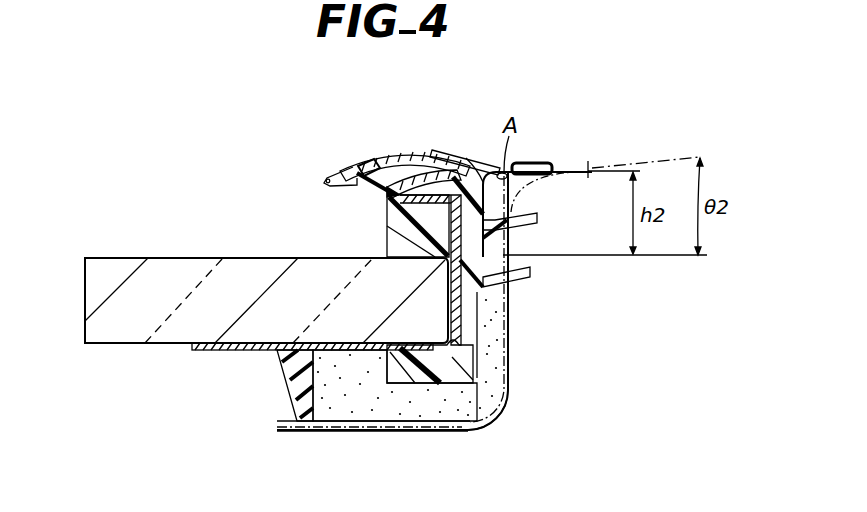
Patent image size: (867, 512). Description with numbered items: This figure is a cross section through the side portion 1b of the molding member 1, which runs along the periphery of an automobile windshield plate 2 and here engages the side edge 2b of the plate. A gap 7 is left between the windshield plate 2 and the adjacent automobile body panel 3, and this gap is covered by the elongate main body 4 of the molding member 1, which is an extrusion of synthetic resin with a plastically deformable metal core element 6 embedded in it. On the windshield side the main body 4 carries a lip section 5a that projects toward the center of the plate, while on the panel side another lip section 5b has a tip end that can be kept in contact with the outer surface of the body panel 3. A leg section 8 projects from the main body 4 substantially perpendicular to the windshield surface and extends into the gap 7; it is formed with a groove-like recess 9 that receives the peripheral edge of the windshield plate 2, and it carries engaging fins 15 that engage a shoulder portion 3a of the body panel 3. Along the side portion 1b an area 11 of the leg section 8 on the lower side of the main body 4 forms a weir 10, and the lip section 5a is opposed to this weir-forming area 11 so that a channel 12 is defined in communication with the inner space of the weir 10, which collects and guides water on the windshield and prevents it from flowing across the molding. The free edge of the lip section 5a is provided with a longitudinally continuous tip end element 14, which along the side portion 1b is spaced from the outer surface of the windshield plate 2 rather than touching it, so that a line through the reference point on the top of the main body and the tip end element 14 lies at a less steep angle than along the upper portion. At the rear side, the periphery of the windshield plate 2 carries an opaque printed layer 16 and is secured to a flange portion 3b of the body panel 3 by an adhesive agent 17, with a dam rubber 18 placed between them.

The molding member 1 is at (431, 147).
The side portion 1b is at (467, 155).
The windshield plate 2 is at (114, 267).
The side edge 2b is at (189, 267).
The body panel 3 is at (589, 171).
The shoulder portion 3a is at (511, 338).
The flange portion 3b is at (318, 433).
The main body 4 is at (456, 147).
The lip section 5a is at (374, 161).
The lip section 5b is at (536, 162).
The core element 6 is at (400, 156).
The gap 7 is at (496, 247).
The leg section 8 is at (481, 380).
The groove-like recess 9 is at (447, 384).
The weir 10 is at (385, 239).
The weir-forming area 11 is at (397, 219).
The channel 12 is at (362, 159).
The tip end element 14 is at (332, 174).
The engaging fins 15 is at (528, 277).
The opaque printed layer 16 is at (200, 352).
The adhesive agent 17 is at (366, 413).
The dam rubber 18 is at (294, 376).